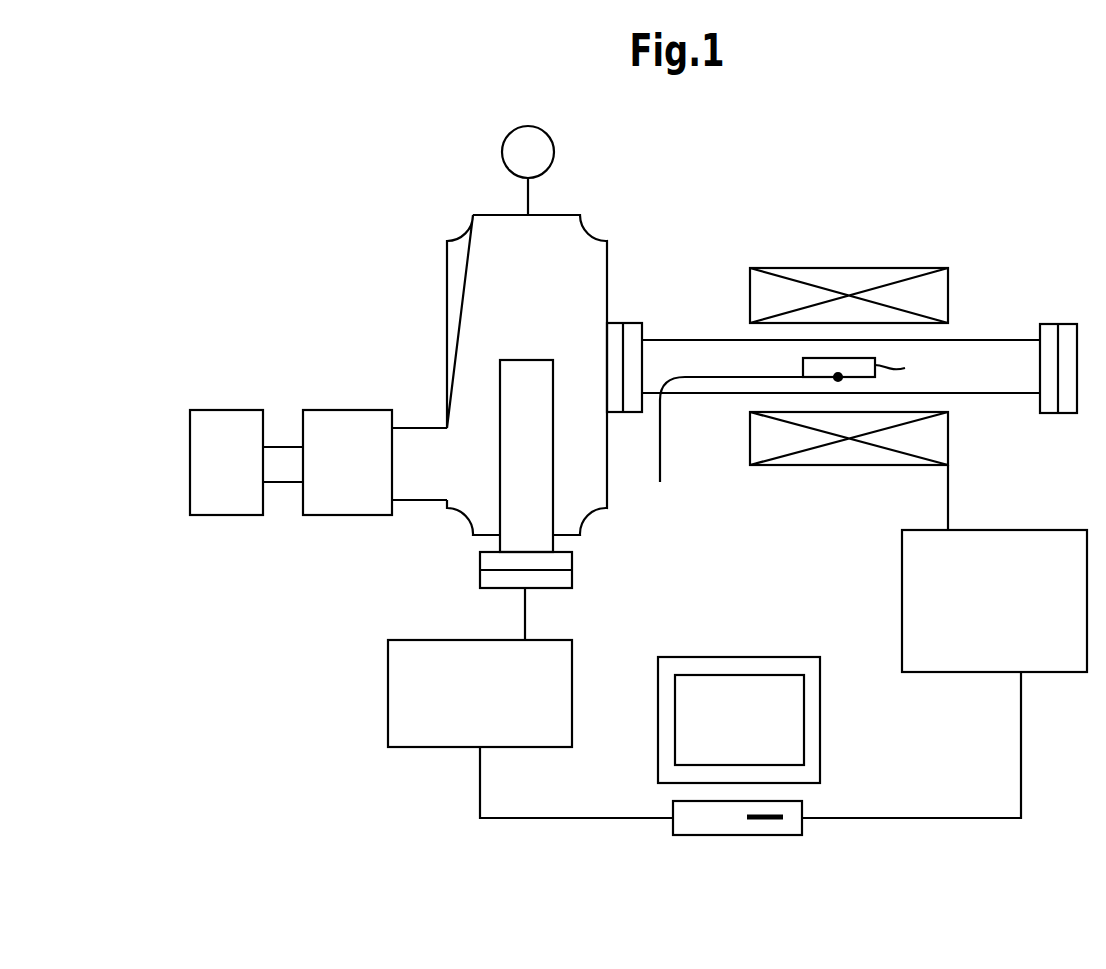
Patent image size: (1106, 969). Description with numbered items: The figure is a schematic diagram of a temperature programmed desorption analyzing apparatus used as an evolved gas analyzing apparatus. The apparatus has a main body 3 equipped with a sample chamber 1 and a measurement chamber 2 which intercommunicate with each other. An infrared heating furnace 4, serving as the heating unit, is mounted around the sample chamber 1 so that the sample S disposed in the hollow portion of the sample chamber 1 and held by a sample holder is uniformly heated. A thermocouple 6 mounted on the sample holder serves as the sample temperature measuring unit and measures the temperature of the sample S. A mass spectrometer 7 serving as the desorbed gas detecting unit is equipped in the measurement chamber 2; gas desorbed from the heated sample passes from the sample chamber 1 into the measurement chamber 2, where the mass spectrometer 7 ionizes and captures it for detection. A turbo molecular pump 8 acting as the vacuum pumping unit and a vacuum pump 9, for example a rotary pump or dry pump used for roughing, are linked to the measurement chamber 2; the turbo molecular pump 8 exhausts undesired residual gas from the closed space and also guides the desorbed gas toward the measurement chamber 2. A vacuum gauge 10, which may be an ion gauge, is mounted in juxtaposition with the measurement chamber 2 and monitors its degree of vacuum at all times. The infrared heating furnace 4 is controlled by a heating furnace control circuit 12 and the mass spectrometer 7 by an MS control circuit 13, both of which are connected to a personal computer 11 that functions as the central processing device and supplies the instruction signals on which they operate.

The sample chamber 1 is at (980, 353).
The measurement chamber 2 is at (473, 283).
The main body 3 is at (656, 342).
The infrared heating furnace 4 is at (948, 437).
The thermocouple 6 is at (838, 380).
The mass spectrometer 7 is at (500, 372).
The turbo molecular pump 8 is at (342, 410).
The vacuum pump 9 is at (230, 410).
The vacuum gauge 10 is at (553, 150).
The personal computer 11 is at (820, 733).
The heating furnace control circuit 12 is at (1022, 530).
The MS control circuit 13 is at (388, 668).